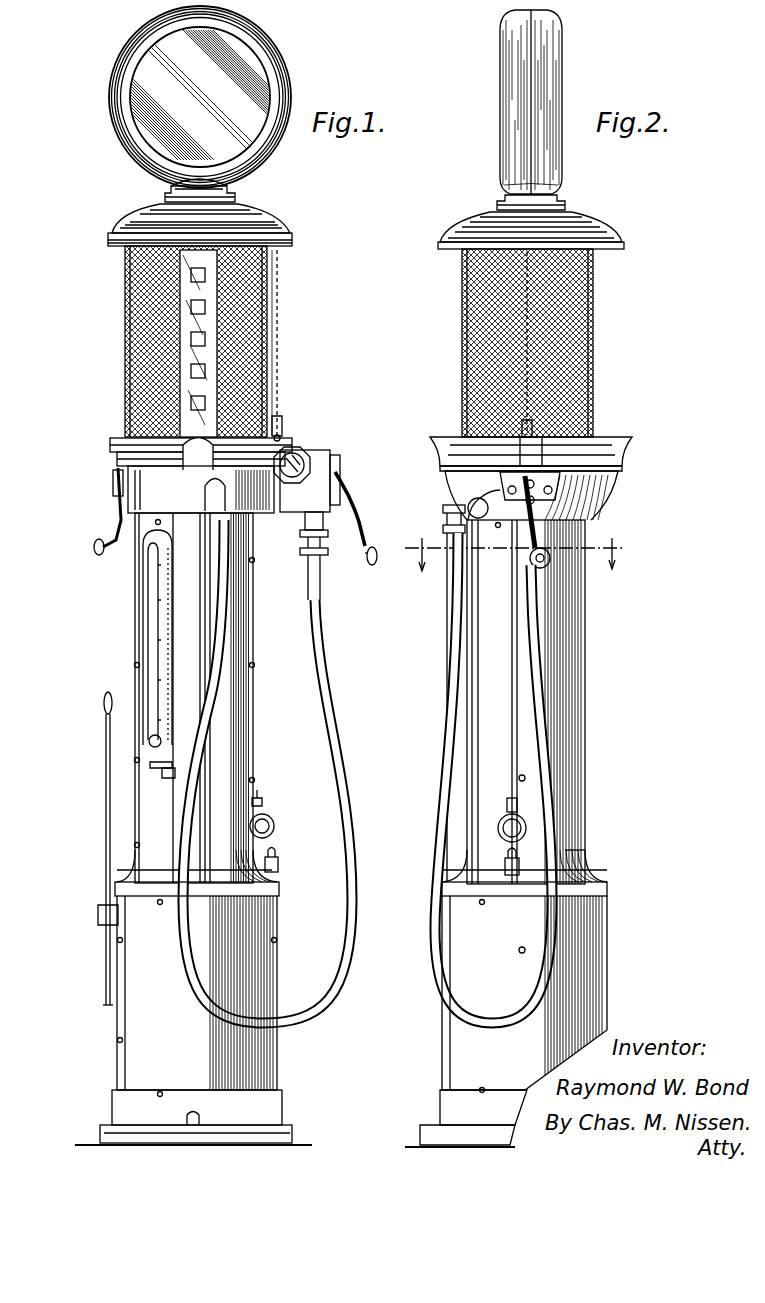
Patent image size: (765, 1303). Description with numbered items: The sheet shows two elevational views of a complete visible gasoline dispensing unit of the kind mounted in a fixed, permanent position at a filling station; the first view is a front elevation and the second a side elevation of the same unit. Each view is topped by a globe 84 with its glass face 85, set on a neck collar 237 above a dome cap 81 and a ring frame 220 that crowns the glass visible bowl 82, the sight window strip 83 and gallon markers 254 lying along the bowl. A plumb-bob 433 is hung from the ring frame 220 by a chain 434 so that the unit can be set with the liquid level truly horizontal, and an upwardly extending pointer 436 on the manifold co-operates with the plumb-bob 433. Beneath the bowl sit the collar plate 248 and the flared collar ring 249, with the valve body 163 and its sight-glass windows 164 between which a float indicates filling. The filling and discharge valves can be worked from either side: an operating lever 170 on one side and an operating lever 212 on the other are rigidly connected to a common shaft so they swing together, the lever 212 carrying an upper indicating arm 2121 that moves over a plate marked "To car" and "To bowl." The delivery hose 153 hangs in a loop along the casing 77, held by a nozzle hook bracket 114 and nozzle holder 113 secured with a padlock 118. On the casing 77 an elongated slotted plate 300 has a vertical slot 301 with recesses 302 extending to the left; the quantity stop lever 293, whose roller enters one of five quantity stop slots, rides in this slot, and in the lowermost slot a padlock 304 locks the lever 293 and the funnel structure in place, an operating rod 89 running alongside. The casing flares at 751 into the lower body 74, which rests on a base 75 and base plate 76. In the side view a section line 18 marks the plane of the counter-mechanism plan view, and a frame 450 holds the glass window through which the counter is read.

In FIG. 1, the globe 84 is at (281, 72).
In FIG. 2, the globe 84 is at (548, 73).
In FIG. 1, the globe glass face 85 is at (253, 98).
In FIG. 1, the globe neck collar 237 is at (240, 195).
In FIG. 2, the globe neck collar 237 is at (567, 199).
In FIG. 1, the dome cap 81 is at (262, 222).
In FIG. 2, the dome cap 81 is at (600, 228).
In FIG. 1, the ring frame 220 is at (115, 247).
In FIG. 2, the ring frame 220 is at (600, 249).
In FIG. 1, the glass measuring cylinder 82 is at (127, 325).
In FIG. 2, the glass measuring cylinder 82 is at (595, 358).
In FIG. 1, the sight window strip 83 is at (192, 273).
In FIG. 1, the gallon indicator markers 254 is at (270, 252).
In FIG. 1, the chain 434 is at (278, 366).
In FIG. 2, the chain 434 is at (535, 330).
In FIG. 1, the plumb-bob 433 is at (281, 423).
In FIG. 2, the plumb-bob 433 is at (597, 411).
In FIG. 1, the pointer 436 is at (281, 435).
In FIG. 1, the collar bracket / selector plate 248 is at (183, 458).
In FIG. 2, the collar bracket / selector plate 248 is at (432, 452).
In FIG. 2, the flared collar ring 249 is at (625, 455).
In FIG. 1, the operating lever 212 is at (113, 525).
In FIG. 1, the indicating arm 2121 is at (113, 480).
In FIG. 1, the sight-glass windows 164 is at (298, 467).
In FIG. 1, the valve body 163 is at (313, 463).
In FIG. 2, the valve body 163 is at (515, 459).
In FIG. 1, the operating lever 170 is at (345, 476).
In FIG. 2, the operating lever 170 is at (545, 507).
In FIG. 1, the delivery hose 153 is at (314, 668).
In FIG. 2, the delivery hose 153 is at (450, 720).
In FIG. 1, the casing 77 is at (147, 799).
In FIG. 2, the casing 77 is at (580, 689).
In FIG. 1, the elongated slotted plate 300 is at (157, 553).
In FIG. 1, the recesses 302 is at (150, 598).
In FIG. 1, the vertical slot 301 is at (151, 623).
In FIG. 1, the quantity stop lever 293 is at (149, 740).
In FIG. 1, the operating rod 89 is at (105, 766).
In FIG. 1, the padlock 304 is at (158, 777).
In FIG. 1, the column base flare 751 is at (147, 856).
In FIG. 2, the column base flare 751 is at (583, 852).
In FIG. 1, the nozzle hook bracket 114 is at (258, 797).
In FIG. 1, the nozzle holder ring 113 is at (270, 820).
In FIG. 2, the nozzle holder ring 113 is at (498, 828).
In FIG. 1, the padlock 118 is at (278, 866).
In FIG. 2, the padlock 118 is at (504, 872).
In FIG. 1, the lower casing body 74 is at (278, 1066).
In FIG. 2, the lower casing body 74 is at (595, 980).
In FIG. 1, the base 75 is at (278, 1106).
In FIG. 2, the base 75 is at (460, 1105).
In FIG. 1, the base plate 76 is at (292, 1138).
In FIG. 2, the section line 18 is at (524, 554).
In FIG. 2, the frame 450 is at (560, 558).